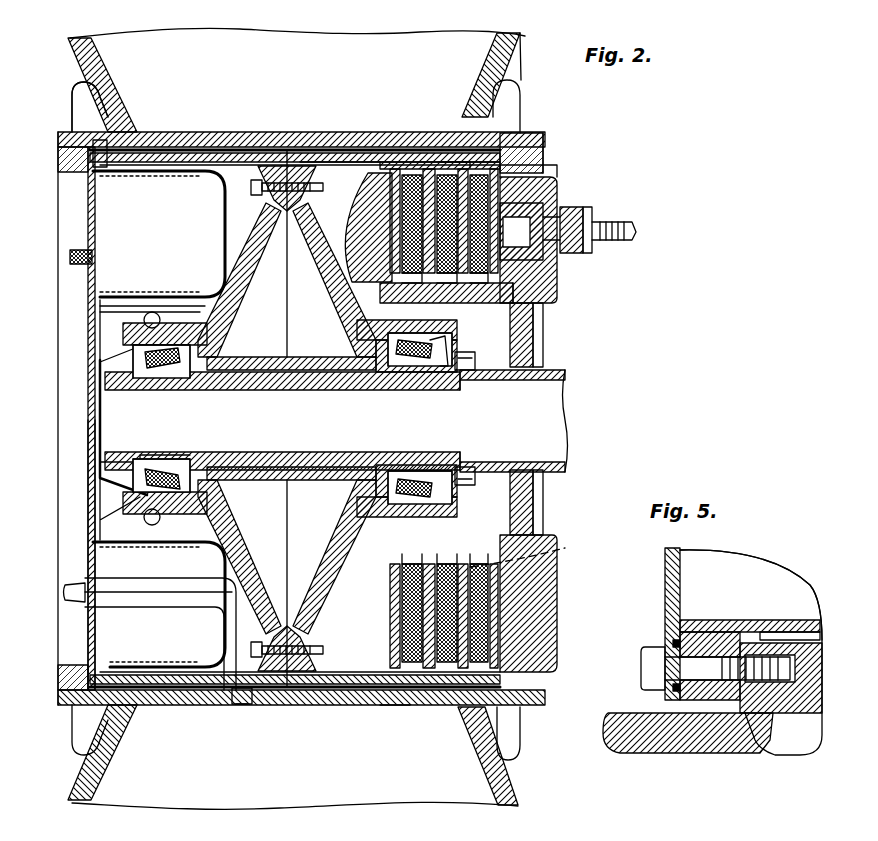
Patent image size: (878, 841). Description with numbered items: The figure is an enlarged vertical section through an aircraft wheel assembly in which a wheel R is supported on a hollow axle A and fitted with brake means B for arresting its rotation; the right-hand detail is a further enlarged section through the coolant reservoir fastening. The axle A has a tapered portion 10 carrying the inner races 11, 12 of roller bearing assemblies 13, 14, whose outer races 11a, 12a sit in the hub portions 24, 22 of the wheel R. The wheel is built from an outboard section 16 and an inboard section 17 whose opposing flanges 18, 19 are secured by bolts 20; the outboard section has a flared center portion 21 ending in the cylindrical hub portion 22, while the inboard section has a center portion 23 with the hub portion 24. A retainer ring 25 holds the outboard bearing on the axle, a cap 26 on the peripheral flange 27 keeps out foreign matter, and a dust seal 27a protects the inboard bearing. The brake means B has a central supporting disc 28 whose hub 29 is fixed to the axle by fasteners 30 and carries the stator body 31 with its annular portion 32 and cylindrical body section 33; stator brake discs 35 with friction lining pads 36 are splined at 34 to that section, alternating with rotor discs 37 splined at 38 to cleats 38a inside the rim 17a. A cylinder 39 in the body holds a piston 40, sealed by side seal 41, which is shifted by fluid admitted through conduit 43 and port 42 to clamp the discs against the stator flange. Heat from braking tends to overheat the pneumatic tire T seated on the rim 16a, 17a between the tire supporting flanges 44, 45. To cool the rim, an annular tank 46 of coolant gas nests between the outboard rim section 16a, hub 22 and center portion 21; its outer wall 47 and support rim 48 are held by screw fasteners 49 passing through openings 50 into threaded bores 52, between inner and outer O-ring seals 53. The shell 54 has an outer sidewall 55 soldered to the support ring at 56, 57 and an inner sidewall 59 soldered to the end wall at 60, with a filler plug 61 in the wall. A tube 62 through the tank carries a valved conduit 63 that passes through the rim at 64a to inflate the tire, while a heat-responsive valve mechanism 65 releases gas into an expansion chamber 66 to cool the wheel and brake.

In FIG. 2, the tapered portion 10 is at (315, 452).
In FIG. 2, the inner race 11 is at (432, 378).
In FIG. 2, the outer race 11a is at (392, 378).
In FIG. 2, the inner race 12 is at (140, 380).
In FIG. 2, the outer race 12a is at (178, 380).
In FIG. 2, the roller bearing assembly 13 is at (432, 340).
In FIG. 2, the roller bearing assembly 14 is at (196, 460).
In FIG. 2, the outboard section 16 is at (215, 128).
In FIG. 5, the outboard section 16 is at (806, 683).
In FIG. 2, the outboard rim section 16a is at (215, 134).
In FIG. 2, the inboard section 17 is at (392, 148).
In FIG. 2, the rim 17a is at (340, 152).
In FIG. 2, the flange 18 is at (234, 633).
In FIG. 2, the flange 19 is at (325, 650).
In FIG. 2, the bolts 20 is at (292, 700).
In FIG. 2, the center portion 21 is at (232, 277).
In FIG. 2, the hub portion 22 is at (202, 492).
In FIG. 2, the center portion 23 is at (340, 276).
In FIG. 2, the hub portion 24 is at (388, 505).
In FIG. 2, the retainer ring 25 is at (128, 462).
In FIG. 2, the cap 26 is at (98, 385).
In FIG. 2, the peripheral flange 27 is at (140, 497).
In FIG. 2, the dust seal 27a is at (463, 362).
In FIG. 2, the central supporting disc 28 is at (540, 352).
In FIG. 2, the hub 29 is at (452, 486).
In FIG. 2, the fasteners 30 is at (520, 500).
In FIG. 2, the body 31 is at (562, 280).
In FIG. 2, the annular portion 32 is at (350, 232).
In FIG. 2, the cylindrical body section 33 is at (520, 302).
In FIG. 2, the spline 34 is at (566, 546).
In FIG. 2, the stator brake discs 35 is at (430, 600).
In FIG. 2, the friction lining pads 36 is at (480, 576).
In FIG. 2, the rotor discs 37 is at (480, 602).
In FIG. 2, the spline 38 is at (387, 165).
In FIG. 2, the cleats 38a is at (445, 162).
In FIG. 2, the cylinder 39 is at (578, 212).
In FIG. 2, the piston 40 is at (521, 231).
In FIG. 2, the side seal 41 is at (532, 198).
In FIG. 2, the port 42 is at (587, 252).
In FIG. 2, the conduit 43 is at (622, 226).
In FIG. 2, the tire supporting flange 44 is at (512, 92).
In FIG. 2, the tire supporting flange 45 is at (86, 82).
In FIG. 2, the tank 46 is at (86, 222).
In FIG. 2, the outer wall 47 is at (92, 548).
In FIG. 5, the outer wall 47 is at (667, 578).
In FIG. 2, the support rim 48 is at (75, 160).
In FIG. 5, the support rim 48 is at (700, 620).
In FIG. 5, the screw fasteners 49 is at (644, 660).
In FIG. 5, the openings 50 is at (668, 670).
In FIG. 5, the threaded bores 52 is at (768, 748).
In FIG. 5, the O-ring seals 53 is at (672, 636).
In FIG. 2, the shell 54 is at (212, 196).
In FIG. 2, the outer sidewall 55 is at (130, 178).
In FIG. 5, the outer sidewall 55 is at (805, 620).
In FIG. 5, the weld 56 is at (722, 620).
In FIG. 5, the weld 57 is at (775, 620).
In FIG. 2, the inner sidewall 59 is at (145, 302).
In FIG. 2, the weld 60 is at (96, 320).
In FIG. 2, the filler plug 61 is at (80, 266).
In FIG. 2, the tube 62 is at (138, 577).
In FIG. 2, the valved conduit 63 is at (75, 598).
In FIG. 2, the conduit passage 64a is at (240, 695).
In FIG. 2, the heat-responsive valve mechanism 65 is at (396, 708).
In FIG. 2, the expansion chamber 66 is at (360, 150).
In FIG. 2, the axle A is at (565, 468).
In FIG. 2, the brake means B is at (578, 190).
In FIG. 2, the pneumatic tire T is at (520, 46).
In FIG. 2, the wheel R is at (532, 112).